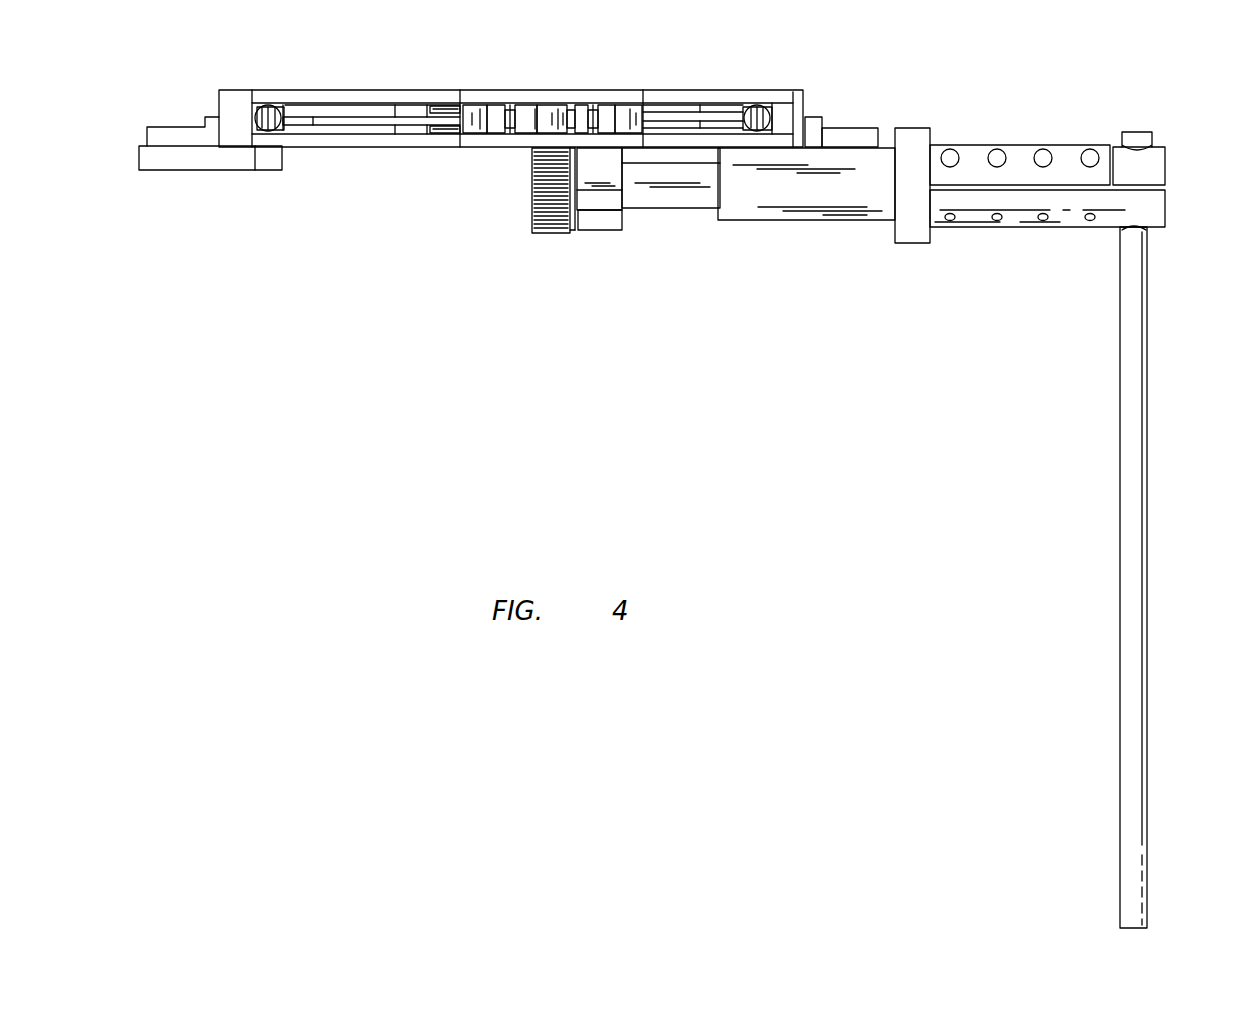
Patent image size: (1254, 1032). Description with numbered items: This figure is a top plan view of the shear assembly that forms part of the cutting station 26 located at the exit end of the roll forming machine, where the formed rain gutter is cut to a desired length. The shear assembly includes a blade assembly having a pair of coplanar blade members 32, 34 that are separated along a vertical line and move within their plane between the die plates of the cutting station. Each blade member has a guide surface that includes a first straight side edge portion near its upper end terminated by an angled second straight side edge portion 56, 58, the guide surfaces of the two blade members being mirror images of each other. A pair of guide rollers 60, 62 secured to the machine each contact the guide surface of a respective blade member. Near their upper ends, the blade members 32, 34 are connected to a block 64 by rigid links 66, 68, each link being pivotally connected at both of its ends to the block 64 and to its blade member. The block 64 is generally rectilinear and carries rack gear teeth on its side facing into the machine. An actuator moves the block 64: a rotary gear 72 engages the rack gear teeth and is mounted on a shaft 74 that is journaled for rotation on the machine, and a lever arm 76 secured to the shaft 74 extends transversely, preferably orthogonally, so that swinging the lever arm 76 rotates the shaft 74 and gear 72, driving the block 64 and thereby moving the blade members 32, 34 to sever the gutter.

The cutting station 26 is at (362, 283).
The blade member 32 is at (683, 110).
The blade member 34 is at (360, 117).
The second straight side edge portion 56 is at (736, 117).
The second straight side edge portion 58 is at (298, 117).
The guide roller 60 is at (777, 118).
The guide roller 62 is at (277, 110).
The block 64 is at (578, 113).
The rigid link 66 is at (612, 112).
The rigid link 68 is at (495, 112).
The rotary gear 72 is at (545, 230).
The shaft 74 is at (640, 200).
The lever arm 76 is at (1140, 852).